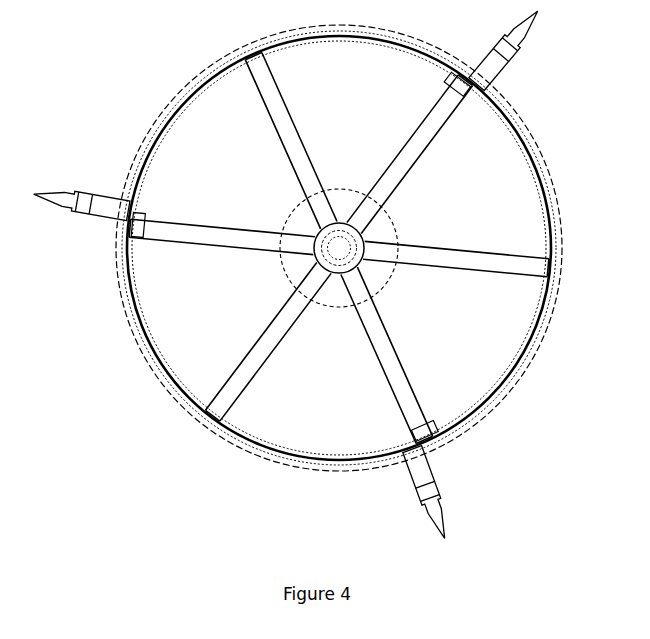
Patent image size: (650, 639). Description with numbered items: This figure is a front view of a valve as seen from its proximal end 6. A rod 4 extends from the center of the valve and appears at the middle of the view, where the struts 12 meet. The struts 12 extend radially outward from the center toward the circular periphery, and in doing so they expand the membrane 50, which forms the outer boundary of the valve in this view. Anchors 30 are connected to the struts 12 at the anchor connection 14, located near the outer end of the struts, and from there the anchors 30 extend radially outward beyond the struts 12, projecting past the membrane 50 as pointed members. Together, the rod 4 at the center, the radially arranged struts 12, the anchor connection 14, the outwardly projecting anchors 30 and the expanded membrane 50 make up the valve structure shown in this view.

The rod 4 is at (338, 250).
The proximal end 6 is at (268, 275).
The struts 12 is at (190, 230).
The anchor connection 14 is at (137, 180).
The anchors 30 is at (92, 192).
The membrane 50 is at (157, 373).